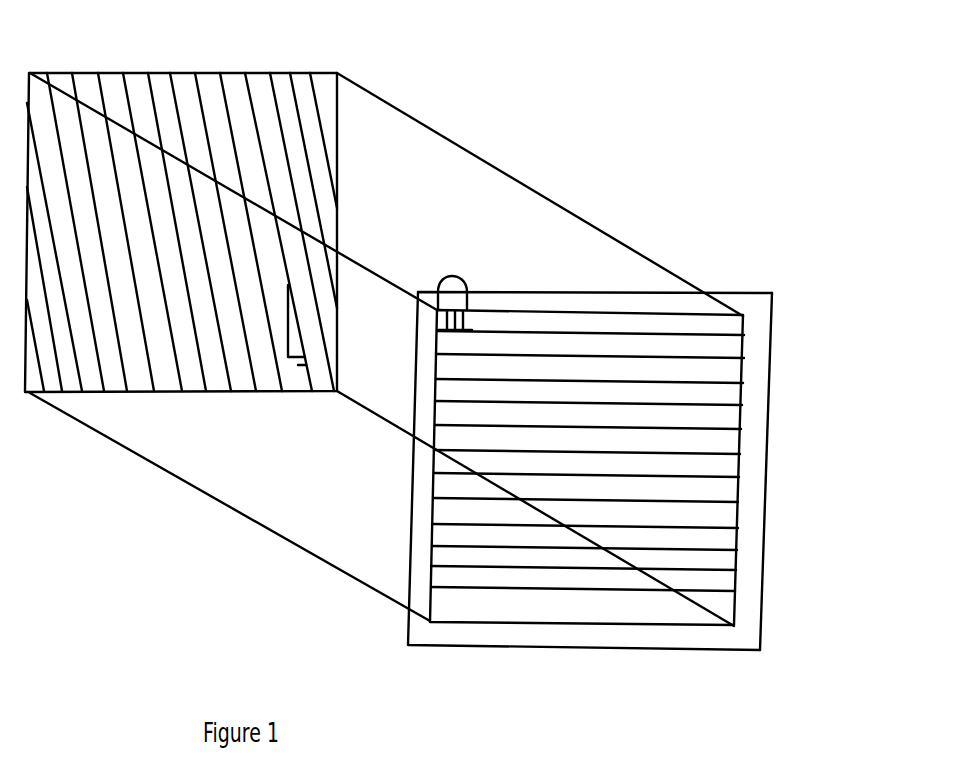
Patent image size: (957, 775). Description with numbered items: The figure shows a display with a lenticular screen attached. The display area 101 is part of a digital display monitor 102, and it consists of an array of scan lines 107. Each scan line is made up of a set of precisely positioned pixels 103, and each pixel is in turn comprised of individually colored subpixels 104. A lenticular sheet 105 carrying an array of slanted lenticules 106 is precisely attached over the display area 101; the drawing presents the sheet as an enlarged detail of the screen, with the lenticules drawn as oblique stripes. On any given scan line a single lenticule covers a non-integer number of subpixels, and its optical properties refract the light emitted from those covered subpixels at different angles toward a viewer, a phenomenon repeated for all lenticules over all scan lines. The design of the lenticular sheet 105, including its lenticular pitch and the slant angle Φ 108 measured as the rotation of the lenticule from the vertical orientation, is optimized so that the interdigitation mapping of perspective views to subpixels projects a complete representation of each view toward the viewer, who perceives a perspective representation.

The display area 101 is at (768, 627).
The digital display monitor 102 is at (664, 453).
The pixels 103 is at (452, 283).
The subpixels 104 is at (468, 315).
The lenticular sheet 105 is at (181, 258).
The slanted lenticules 106 is at (157, 85).
The scan lines 107 is at (828, 627).
The slant angle Φ 108 is at (320, 335).